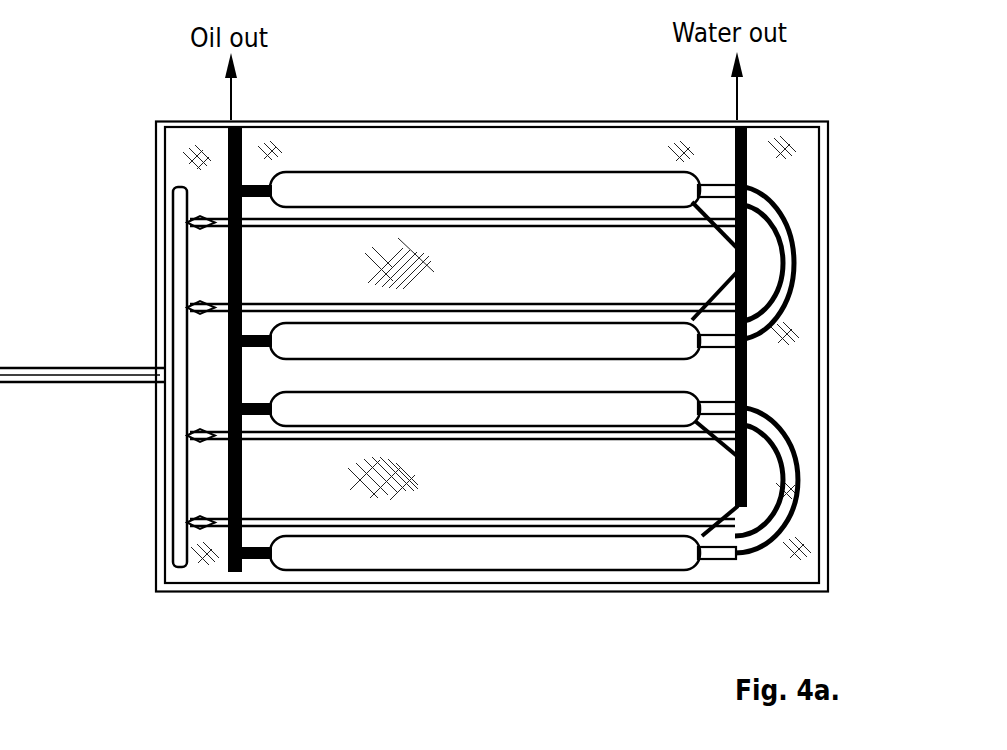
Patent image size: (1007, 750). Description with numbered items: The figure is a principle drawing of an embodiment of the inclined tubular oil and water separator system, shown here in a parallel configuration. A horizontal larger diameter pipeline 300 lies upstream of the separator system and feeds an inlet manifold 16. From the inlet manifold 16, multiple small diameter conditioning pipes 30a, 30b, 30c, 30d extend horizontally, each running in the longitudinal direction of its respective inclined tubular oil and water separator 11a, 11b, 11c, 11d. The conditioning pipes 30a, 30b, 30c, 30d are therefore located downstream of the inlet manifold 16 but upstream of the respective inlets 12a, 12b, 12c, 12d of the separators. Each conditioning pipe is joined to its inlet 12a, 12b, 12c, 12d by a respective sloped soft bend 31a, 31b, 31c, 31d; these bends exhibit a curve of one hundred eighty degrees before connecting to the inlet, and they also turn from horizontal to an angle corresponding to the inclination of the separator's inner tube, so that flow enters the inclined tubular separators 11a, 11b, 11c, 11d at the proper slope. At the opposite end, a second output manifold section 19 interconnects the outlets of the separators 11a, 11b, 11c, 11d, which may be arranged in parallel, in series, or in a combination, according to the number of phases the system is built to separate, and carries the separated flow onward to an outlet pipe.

The inlet manifold 16 is at (160, 184).
The horizontal larger diameter pipeline 300 is at (135, 368).
The second output manifold section 19 is at (755, 152).
The inclined tubular oil and water separator 11a is at (425, 553).
The inclined tubular oil and water separator 11b is at (528, 410).
The inclined tubular oil and water separator 11c is at (425, 330).
The inclined tubular oil and water separator 11d is at (452, 172).
The inlet 12a is at (703, 560).
The inlet 12b is at (703, 407).
The inlet 12c is at (700, 345).
The inlet 12d is at (700, 185).
The conditioning pipe 30a is at (346, 440).
The conditioning pipe 30b is at (620, 519).
The conditioning pipe 30c is at (343, 225).
The conditioning pipe 30d is at (550, 303).
The sloped soft bend 31a is at (784, 500).
The sloped soft bend 31b is at (804, 452).
The sloped soft bend 31c is at (786, 303).
The sloped soft bend 31d is at (796, 210).